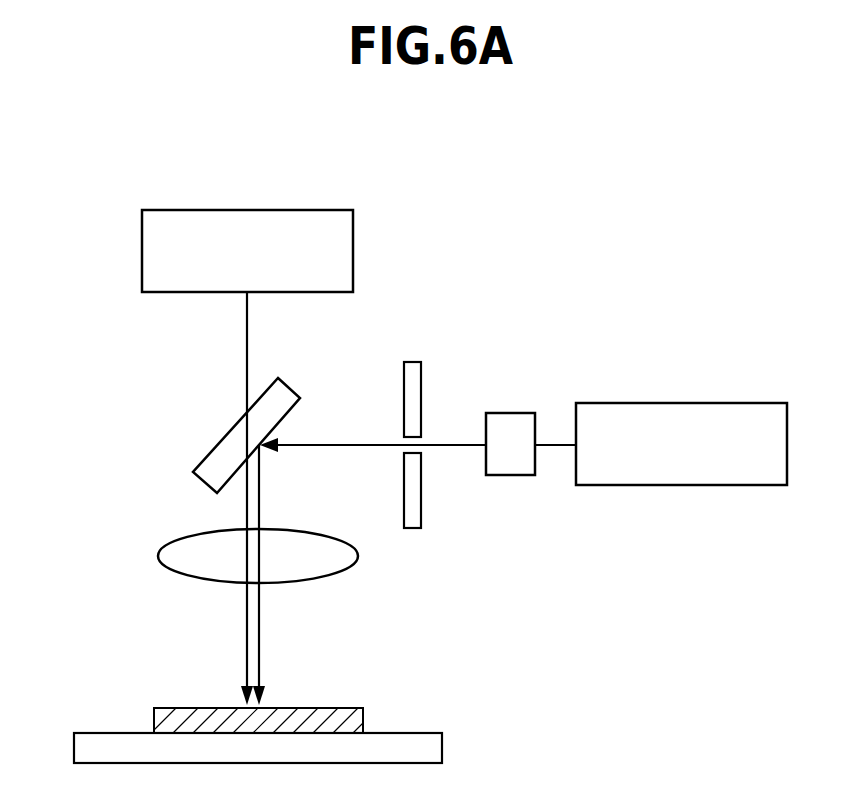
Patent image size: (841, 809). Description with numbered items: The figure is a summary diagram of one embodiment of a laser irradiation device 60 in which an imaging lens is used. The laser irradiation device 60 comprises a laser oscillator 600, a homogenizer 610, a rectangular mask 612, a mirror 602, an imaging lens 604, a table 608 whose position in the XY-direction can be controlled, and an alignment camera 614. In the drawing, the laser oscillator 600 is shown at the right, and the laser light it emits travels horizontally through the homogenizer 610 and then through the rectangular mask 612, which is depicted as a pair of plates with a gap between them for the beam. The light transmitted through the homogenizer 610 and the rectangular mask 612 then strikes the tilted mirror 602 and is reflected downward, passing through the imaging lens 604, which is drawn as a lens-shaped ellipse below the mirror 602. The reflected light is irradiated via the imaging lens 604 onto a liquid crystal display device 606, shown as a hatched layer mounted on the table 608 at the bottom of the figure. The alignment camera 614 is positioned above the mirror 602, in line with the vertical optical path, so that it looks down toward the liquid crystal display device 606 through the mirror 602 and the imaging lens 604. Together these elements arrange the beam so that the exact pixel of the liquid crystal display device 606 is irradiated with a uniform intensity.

The laser irradiation device 60 is at (615, 240).
The laser oscillator 600 is at (667, 415).
The mirror 602 is at (276, 407).
The imaging lens 604 is at (340, 554).
The liquid crystal display device 606 is at (363, 716).
The table 608 is at (425, 748).
The homogenizer 610 is at (508, 413).
The rectangular mask 612 is at (413, 370).
The alignment camera 614 is at (236, 222).